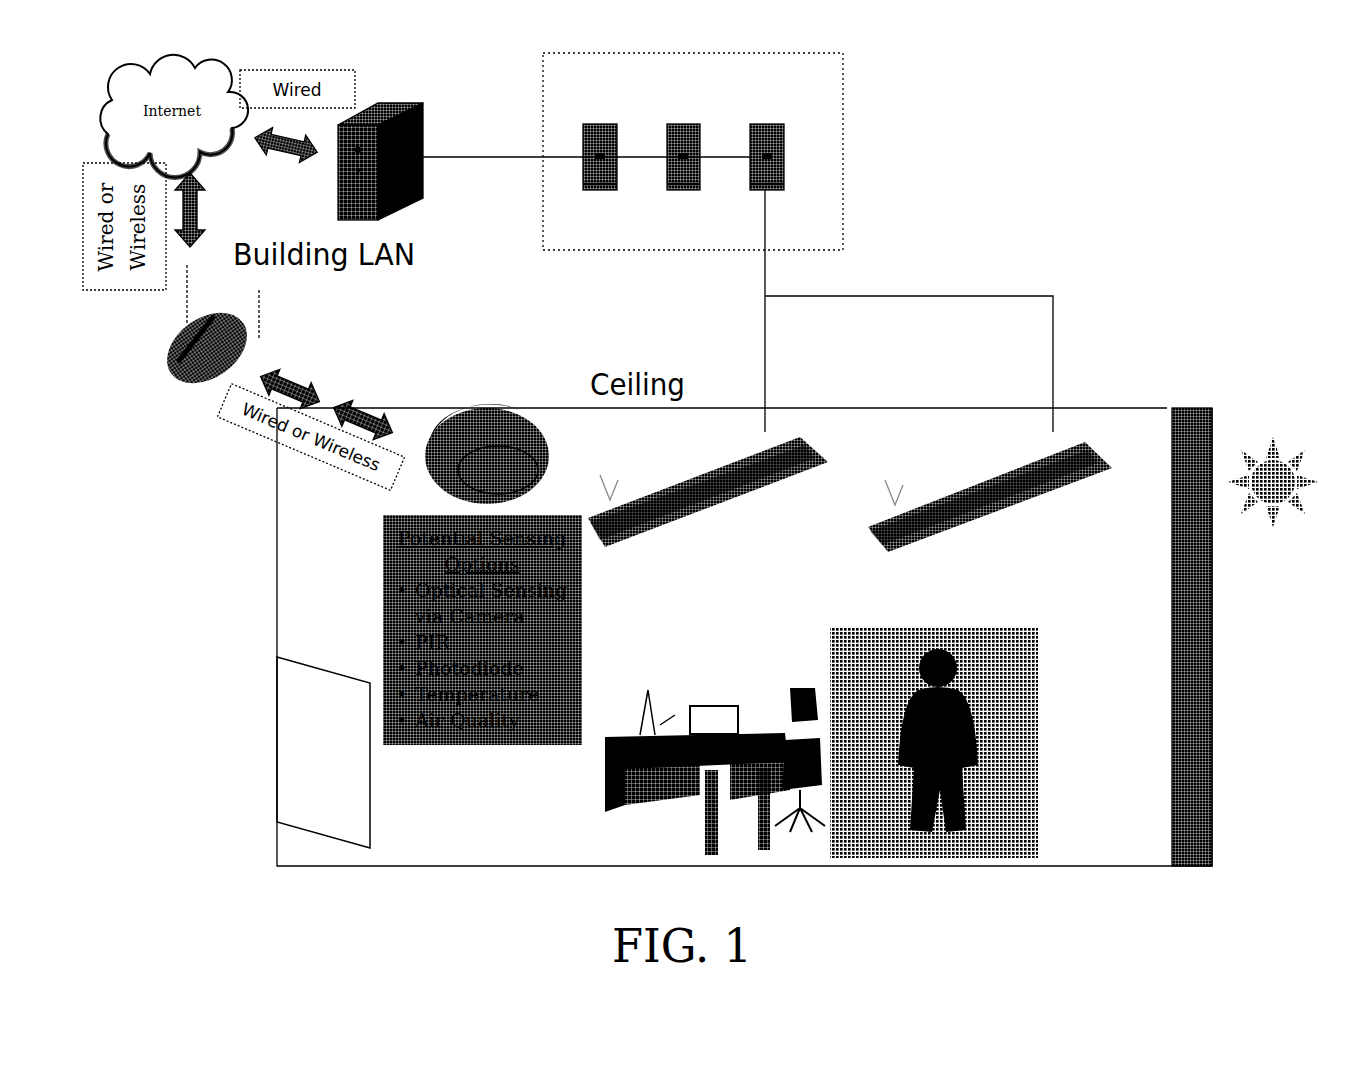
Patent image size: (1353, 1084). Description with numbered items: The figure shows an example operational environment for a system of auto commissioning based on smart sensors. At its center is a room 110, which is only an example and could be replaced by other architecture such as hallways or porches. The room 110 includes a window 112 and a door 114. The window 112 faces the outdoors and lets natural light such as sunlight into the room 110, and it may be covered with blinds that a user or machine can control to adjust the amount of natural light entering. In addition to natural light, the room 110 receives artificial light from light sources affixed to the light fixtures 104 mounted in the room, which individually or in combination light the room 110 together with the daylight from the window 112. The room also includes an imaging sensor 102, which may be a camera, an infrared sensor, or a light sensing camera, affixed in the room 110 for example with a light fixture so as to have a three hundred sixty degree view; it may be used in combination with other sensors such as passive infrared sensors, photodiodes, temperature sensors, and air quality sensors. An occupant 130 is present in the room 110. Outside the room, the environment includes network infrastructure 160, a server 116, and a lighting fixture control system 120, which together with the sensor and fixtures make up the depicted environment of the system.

The imaging sensor 102 is at (540, 440).
The light fixtures 104 is at (1005, 455).
The room 110 is at (1148, 425).
The window 112 is at (1207, 428).
The door 114 is at (290, 802).
The server 116 is at (418, 105).
The lighting fixture control system 120 is at (845, 97).
The occupant 130 is at (1030, 773).
The network infrastructure 160 is at (170, 342).